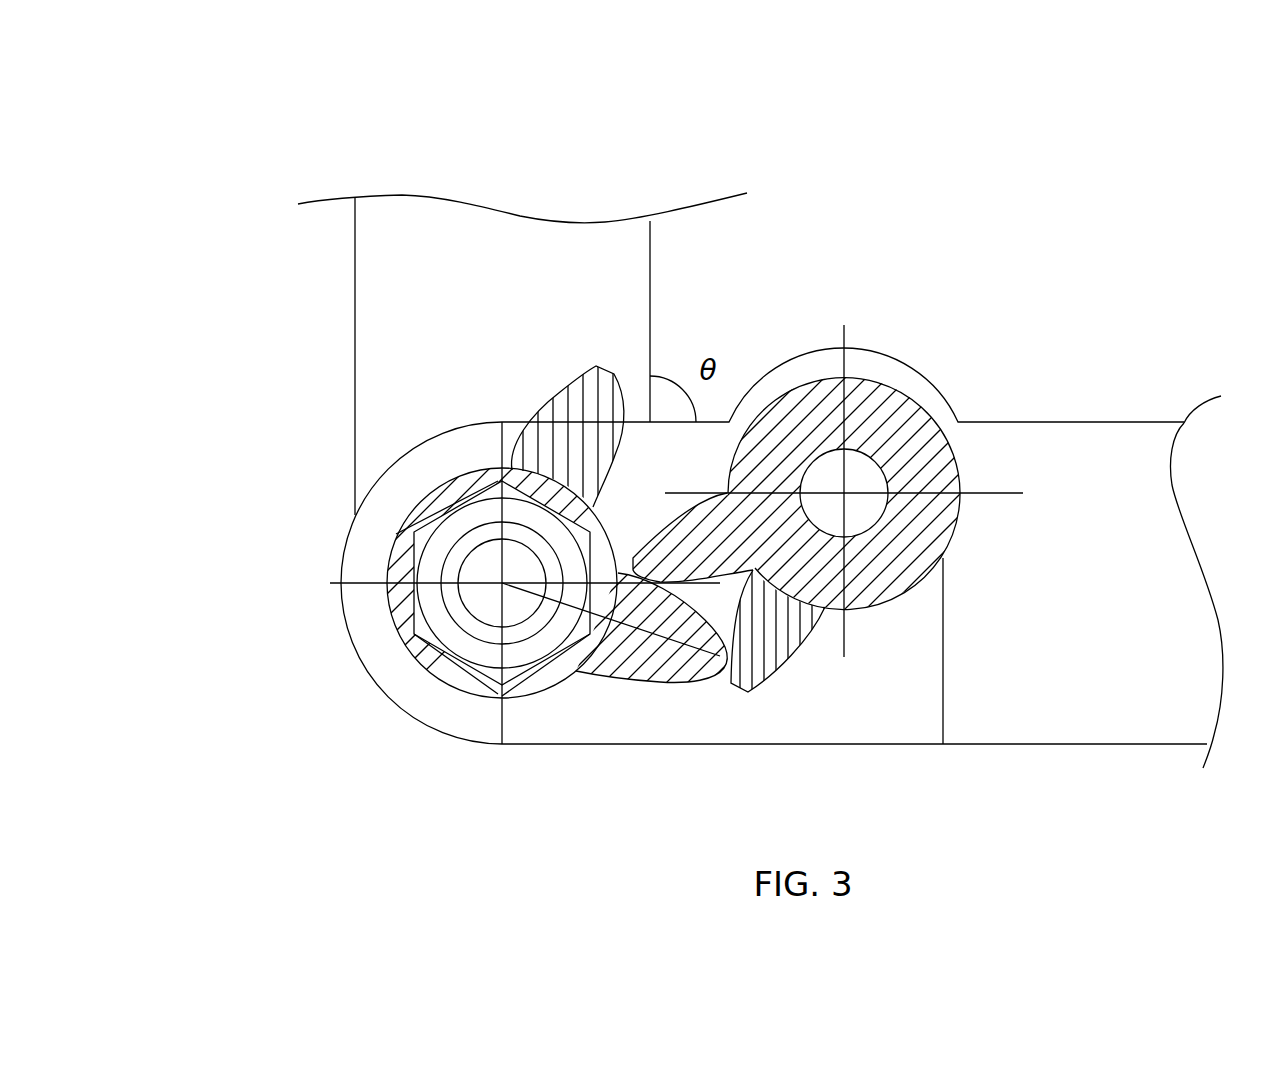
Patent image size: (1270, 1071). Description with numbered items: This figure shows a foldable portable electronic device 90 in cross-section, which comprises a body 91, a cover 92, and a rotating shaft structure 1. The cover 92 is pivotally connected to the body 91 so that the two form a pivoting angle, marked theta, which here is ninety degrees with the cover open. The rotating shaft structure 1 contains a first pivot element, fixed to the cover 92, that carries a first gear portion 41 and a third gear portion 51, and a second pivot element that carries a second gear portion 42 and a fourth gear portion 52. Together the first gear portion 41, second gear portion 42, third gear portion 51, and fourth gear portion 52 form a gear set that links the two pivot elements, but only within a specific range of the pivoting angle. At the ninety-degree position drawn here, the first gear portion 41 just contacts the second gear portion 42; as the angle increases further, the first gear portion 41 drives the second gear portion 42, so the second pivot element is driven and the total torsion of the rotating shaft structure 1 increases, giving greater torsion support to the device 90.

The rotating shaft structure 1 is at (572, 712).
The first gear portion 41 is at (640, 653).
The second gear portion 42 is at (718, 565).
The third gear portion 51 is at (573, 400).
The fourth gear portion 52 is at (788, 643).
The foldable portable electronic device 90 is at (380, 128).
The body 91 is at (1093, 472).
The cover 92 is at (389, 295).